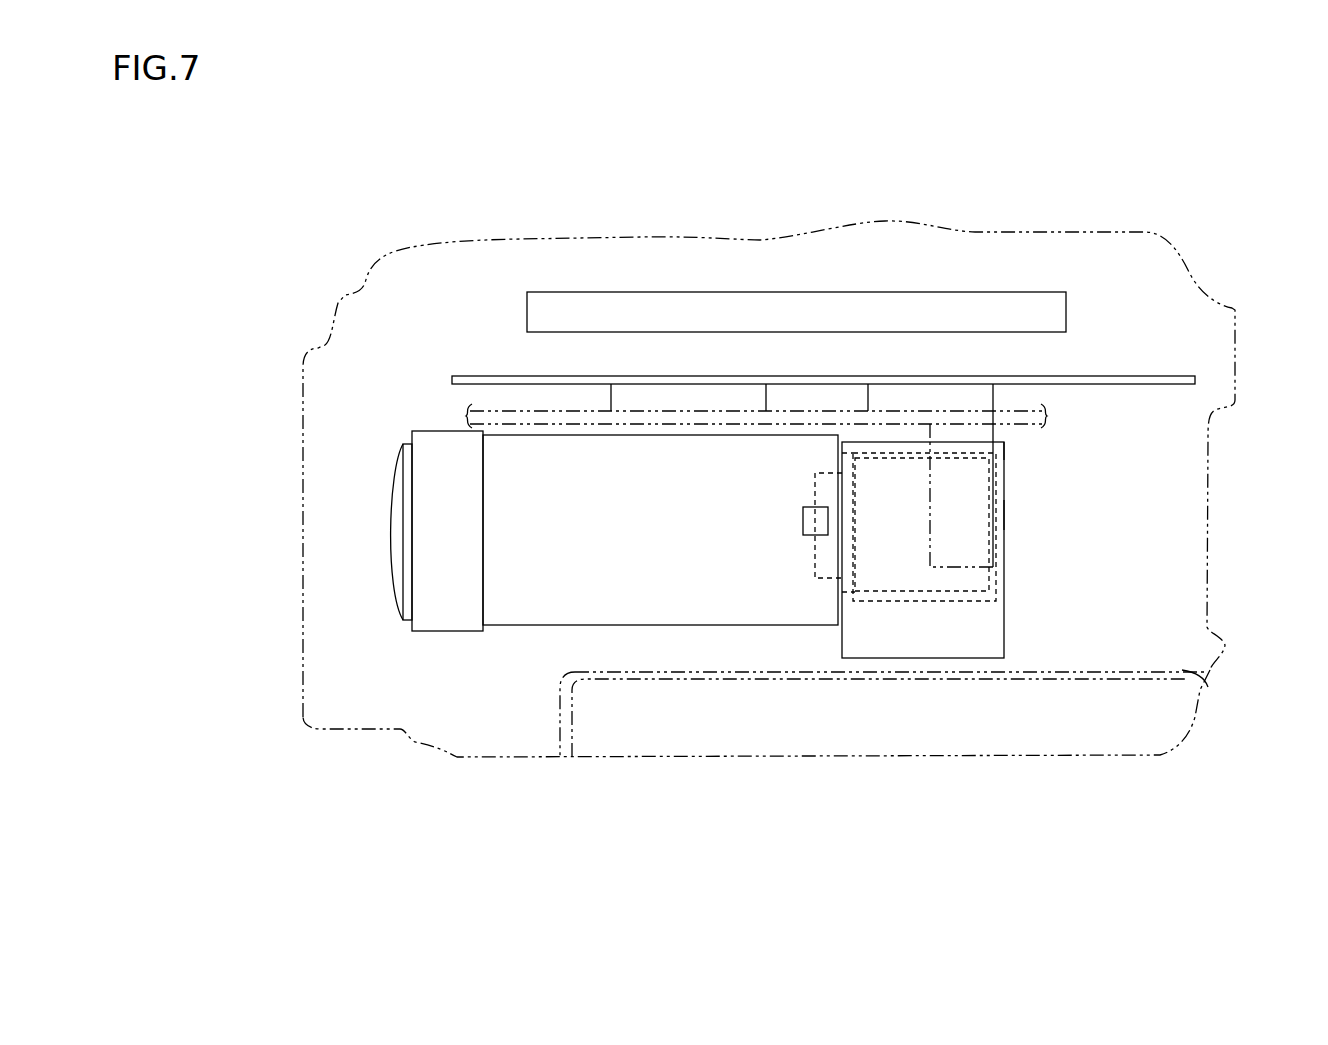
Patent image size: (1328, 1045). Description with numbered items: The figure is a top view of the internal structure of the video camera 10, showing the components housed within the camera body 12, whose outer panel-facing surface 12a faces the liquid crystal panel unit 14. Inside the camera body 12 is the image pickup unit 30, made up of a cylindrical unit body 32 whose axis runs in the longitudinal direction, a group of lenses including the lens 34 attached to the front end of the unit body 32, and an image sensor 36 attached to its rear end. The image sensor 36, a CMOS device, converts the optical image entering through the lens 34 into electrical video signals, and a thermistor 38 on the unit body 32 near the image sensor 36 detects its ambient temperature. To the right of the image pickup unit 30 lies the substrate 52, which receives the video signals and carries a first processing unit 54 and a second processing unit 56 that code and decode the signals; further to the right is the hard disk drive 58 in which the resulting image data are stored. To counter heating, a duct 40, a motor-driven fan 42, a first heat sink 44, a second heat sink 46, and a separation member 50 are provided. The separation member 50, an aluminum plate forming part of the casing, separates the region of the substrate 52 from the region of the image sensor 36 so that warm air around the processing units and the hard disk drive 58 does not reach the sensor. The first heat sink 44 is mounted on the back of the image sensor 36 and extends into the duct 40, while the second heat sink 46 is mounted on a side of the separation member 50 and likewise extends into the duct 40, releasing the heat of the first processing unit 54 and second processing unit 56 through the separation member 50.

The video camera 10 is at (1200, 232).
The camera body 12 is at (972, 232).
The panel-facing surface 12a is at (1213, 686).
The liquid crystal panel unit 14 is at (1200, 715).
The image pickup unit 30 is at (520, 658).
The unit body 32 is at (455, 632).
The lens 34 is at (396, 590).
The image sensor 36 is at (830, 578).
The thermistor 38 is at (803, 525).
The duct 40 is at (1004, 516).
The motor-driven fan 42 is at (990, 600).
The first heat sink 44 is at (1000, 582).
The second heat sink 46 is at (1004, 445).
The separation member 50 is at (1015, 425).
The substrate 52 is at (1160, 385).
The first processing unit 54 is at (768, 400).
The second processing unit 56 is at (993, 398).
The hard disk drive 58 is at (1066, 312).